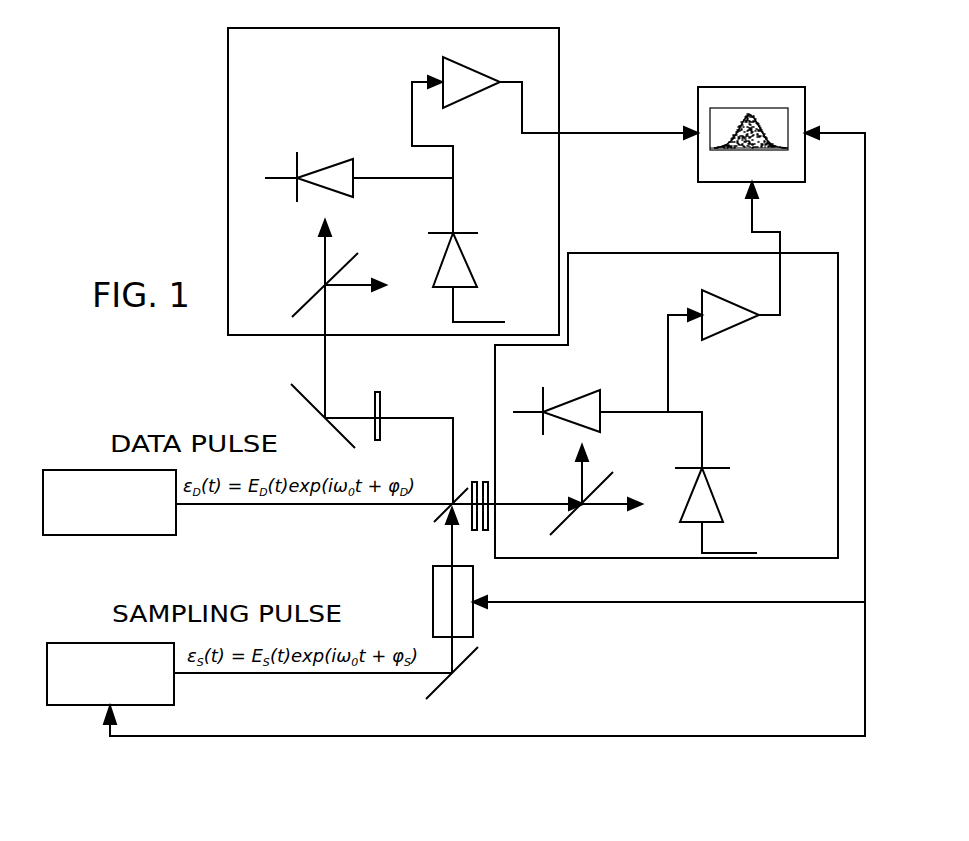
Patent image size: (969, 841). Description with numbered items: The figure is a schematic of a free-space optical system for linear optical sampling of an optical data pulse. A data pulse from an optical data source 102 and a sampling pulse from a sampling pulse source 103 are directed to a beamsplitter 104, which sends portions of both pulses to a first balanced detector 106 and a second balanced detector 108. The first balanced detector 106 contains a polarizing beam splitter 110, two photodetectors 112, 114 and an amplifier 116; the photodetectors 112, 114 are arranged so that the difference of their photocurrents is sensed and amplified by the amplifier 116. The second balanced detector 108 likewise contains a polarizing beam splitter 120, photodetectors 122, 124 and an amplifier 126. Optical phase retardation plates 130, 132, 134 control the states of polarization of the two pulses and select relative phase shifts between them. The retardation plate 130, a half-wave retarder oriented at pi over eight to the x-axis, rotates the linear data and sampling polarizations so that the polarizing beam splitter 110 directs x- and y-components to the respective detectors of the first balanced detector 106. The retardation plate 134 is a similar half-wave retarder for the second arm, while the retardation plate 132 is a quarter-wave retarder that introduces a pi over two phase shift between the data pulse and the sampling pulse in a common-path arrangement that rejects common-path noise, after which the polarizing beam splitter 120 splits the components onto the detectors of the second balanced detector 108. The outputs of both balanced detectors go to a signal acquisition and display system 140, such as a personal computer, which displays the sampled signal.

The optical data source 102 is at (143, 535).
The sampling pulse source 103 is at (80, 705).
The beamsplitter 104 is at (442, 513).
The first balanced detector 106 is at (560, 107).
The second balanced detector 108 is at (583, 253).
The polarizing beam splitter 110 is at (300, 305).
The photodetector 112 is at (345, 164).
The photodetector 114 is at (467, 279).
The amplifier 116 is at (487, 84).
The polarizing beam splitter 120 is at (557, 530).
The photodetector 122 is at (573, 395).
The photodetector 124 is at (719, 506).
The amplifier 126 is at (716, 335).
The optical phase retardation plate 130 is at (376, 402).
The optical phase retardation plate 132 is at (486, 535).
The optical phase retardation plate 134 is at (475, 478).
The signal acquisition and display system 140 is at (752, 87).